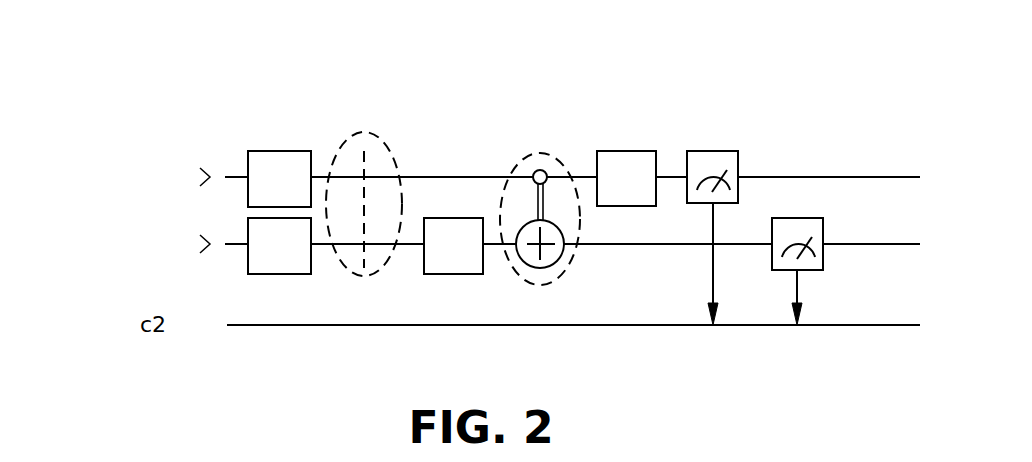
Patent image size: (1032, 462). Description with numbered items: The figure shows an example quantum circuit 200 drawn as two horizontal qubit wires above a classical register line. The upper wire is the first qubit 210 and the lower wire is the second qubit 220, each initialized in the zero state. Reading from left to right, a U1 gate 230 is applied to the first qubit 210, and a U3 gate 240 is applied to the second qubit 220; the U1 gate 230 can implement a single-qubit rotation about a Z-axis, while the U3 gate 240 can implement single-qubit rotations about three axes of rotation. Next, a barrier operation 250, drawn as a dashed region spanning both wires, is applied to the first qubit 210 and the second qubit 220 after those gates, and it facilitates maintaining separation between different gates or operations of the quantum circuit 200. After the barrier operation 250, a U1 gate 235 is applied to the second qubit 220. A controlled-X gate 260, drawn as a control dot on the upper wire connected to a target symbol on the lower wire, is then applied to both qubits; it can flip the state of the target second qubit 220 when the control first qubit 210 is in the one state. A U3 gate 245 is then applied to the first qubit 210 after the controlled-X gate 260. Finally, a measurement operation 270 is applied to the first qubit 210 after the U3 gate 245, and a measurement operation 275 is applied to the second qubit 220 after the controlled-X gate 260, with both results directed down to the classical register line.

The quantum circuit 200 is at (808, 38).
The first qubit 210 is at (110, 185).
The second qubit 220 is at (110, 250).
The U1 gate 230 is at (247, 160).
The U3 gate 240 is at (270, 274).
The barrier operation 250 is at (363, 276).
The U1 gate 235 is at (452, 274).
The controlled-X gate 260 is at (543, 282).
The U3 gate 245 is at (597, 157).
The measurement operation 270 is at (687, 157).
The measurement operation 275 is at (820, 270).